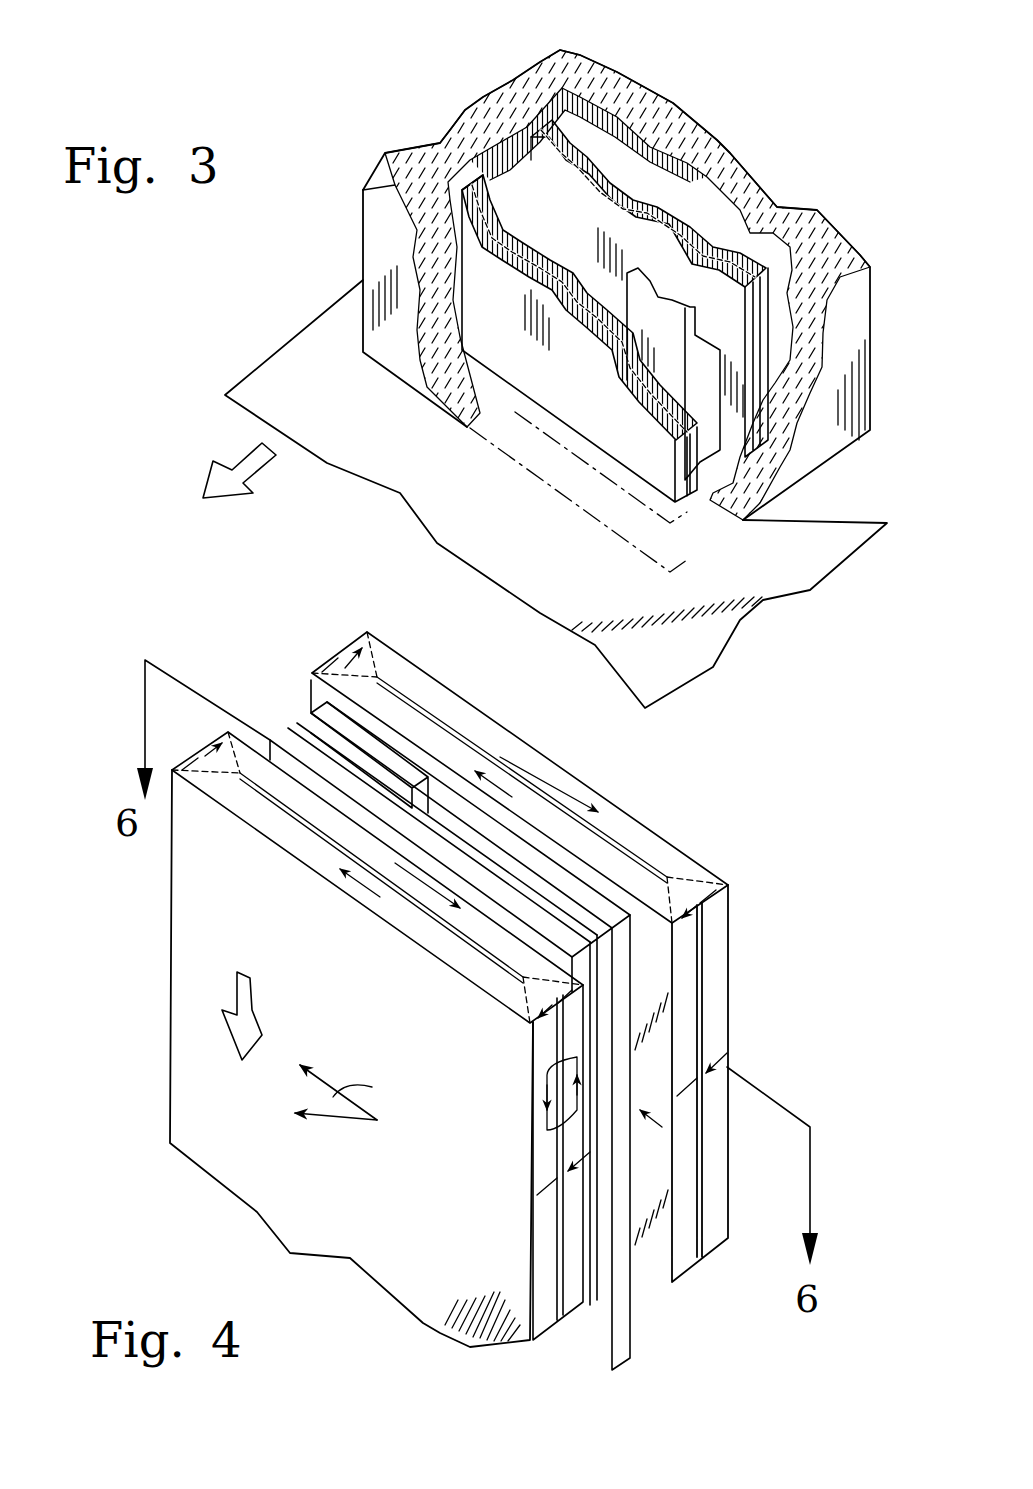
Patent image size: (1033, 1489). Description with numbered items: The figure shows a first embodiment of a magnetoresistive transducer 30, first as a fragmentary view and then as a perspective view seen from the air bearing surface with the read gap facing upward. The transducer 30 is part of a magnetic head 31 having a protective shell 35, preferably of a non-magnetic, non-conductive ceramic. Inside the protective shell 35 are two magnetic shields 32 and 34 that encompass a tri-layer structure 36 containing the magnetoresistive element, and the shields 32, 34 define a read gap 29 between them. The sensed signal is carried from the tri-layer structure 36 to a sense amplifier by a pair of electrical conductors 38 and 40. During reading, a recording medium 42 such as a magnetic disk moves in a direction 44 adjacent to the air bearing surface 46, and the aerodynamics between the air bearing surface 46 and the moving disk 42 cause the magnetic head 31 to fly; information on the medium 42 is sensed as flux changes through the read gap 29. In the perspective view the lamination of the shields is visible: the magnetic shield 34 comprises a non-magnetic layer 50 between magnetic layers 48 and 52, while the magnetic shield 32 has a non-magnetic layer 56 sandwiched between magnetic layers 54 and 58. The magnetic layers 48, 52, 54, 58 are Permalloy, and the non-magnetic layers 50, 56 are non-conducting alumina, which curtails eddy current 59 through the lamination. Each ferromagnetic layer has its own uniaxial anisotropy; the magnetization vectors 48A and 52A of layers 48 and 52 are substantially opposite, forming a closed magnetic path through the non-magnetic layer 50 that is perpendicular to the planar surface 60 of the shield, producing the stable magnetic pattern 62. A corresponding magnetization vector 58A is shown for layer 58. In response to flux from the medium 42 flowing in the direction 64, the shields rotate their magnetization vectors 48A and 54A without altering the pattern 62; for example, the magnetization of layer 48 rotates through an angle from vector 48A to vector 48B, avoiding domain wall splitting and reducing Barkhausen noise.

In FIG. 3, the read gap 29 is at (708, 480).
In FIG. 4, the read gap 29 is at (267, 685).
In FIG. 3, the magnetoresistive transducer 30 is at (416, 114).
In FIG. 4, the magnetoresistive transducer 30 is at (220, 632).
In FIG. 3, the magnetic head 31 is at (476, 70).
In FIG. 3, the magnetic shield 32 is at (610, 427).
In FIG. 4, the magnetic shield 32 is at (736, 984).
In FIG. 3, the magnetic shield 34 is at (727, 311).
In FIG. 4, the magnetic shield 34 is at (165, 1014).
In FIG. 3, the protective shell 35 is at (362, 248).
In FIG. 3, the tri-layer structure 36 is at (718, 465).
In FIG. 4, the tri-layer structure 36 is at (285, 722).
In FIG. 3, the electrical conductor 38 is at (547, 229).
In FIG. 3, the electrical conductor 40 is at (675, 347).
In FIG. 3, the recording medium 42 is at (283, 387).
In FIG. 3, the direction 44 is at (268, 470).
In FIG. 3, the air bearing surface 46 is at (380, 367).
In FIG. 4, the magnetic layer 48 is at (460, 963).
In FIG. 4, the magnetization vector 48A is at (367, 845).
In FIG. 4, the magnetization vector 48B is at (338, 1122).
In FIG. 4, the non-magnetic layer 50 is at (203, 747).
In FIG. 4, the magnetic layer 52 is at (266, 748).
In FIG. 4, the magnetization vector 52A is at (397, 862).
In FIG. 4, the magnetic layer 54 is at (420, 692).
In FIG. 4, the magnetization vector 54A is at (507, 787).
In FIG. 4, the non-magnetic layer 56 is at (333, 672).
In FIG. 4, the magnetic layer 58 is at (393, 670).
In FIG. 4, the magnetization vector 58A is at (540, 773).
In FIG. 4, the eddy current 59 is at (547, 1083).
In FIG. 4, the planar surface 60 is at (188, 1073).
In FIG. 4, the magnetic pattern 62 is at (212, 782).
In FIG. 4, the direction 64 is at (223, 990).